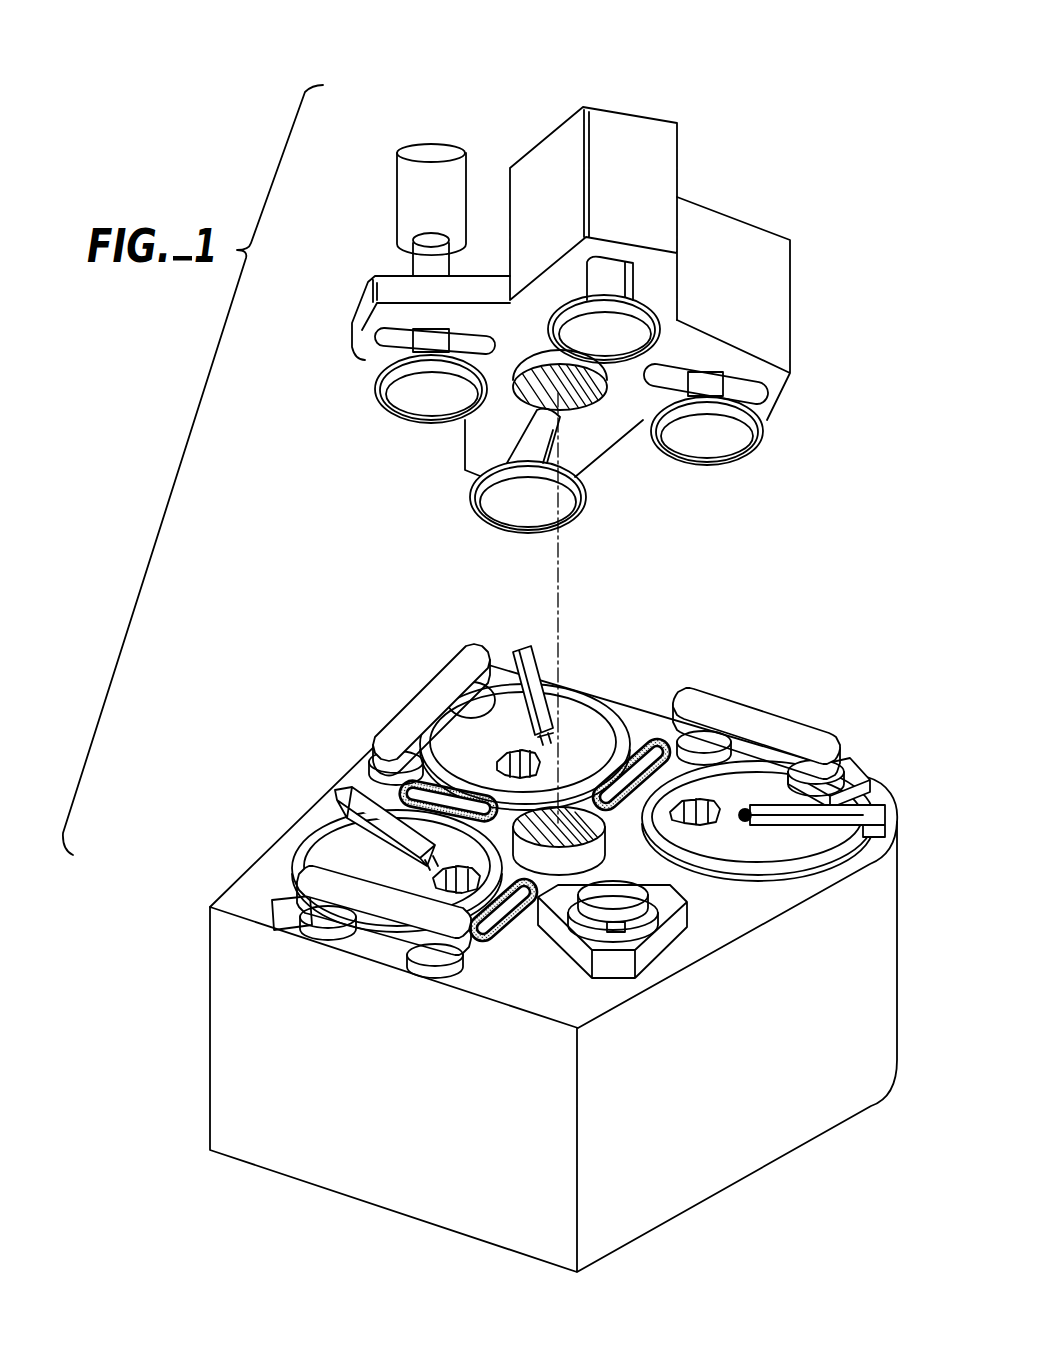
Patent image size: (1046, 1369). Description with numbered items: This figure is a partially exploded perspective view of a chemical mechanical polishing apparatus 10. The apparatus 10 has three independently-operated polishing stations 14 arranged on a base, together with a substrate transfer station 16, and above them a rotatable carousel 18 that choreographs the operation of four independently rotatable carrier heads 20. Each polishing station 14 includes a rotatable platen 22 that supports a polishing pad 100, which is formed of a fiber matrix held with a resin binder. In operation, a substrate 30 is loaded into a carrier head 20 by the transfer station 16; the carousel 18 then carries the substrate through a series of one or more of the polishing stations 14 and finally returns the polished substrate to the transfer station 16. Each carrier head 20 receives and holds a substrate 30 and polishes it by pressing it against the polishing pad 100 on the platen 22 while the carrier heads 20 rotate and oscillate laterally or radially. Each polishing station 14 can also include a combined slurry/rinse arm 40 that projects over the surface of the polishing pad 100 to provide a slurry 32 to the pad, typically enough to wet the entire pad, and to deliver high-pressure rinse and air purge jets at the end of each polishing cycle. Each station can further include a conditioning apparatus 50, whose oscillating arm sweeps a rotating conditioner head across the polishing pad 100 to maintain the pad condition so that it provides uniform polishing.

The polishing apparatus 10 is at (723, 58).
The polishing station 14 is at (617, 712).
The substrate transfer station 16 is at (580, 968).
The rotatable carousel 18 is at (808, 338).
The carrier head 20 is at (643, 308).
The rotatable platen 22 is at (582, 717).
The substrate 30 is at (620, 325).
The slurry 32 is at (503, 758).
The slurry/rinse arm 40 is at (527, 648).
The conditioning apparatus 50 is at (410, 688).
The polishing pad 100 is at (568, 713).